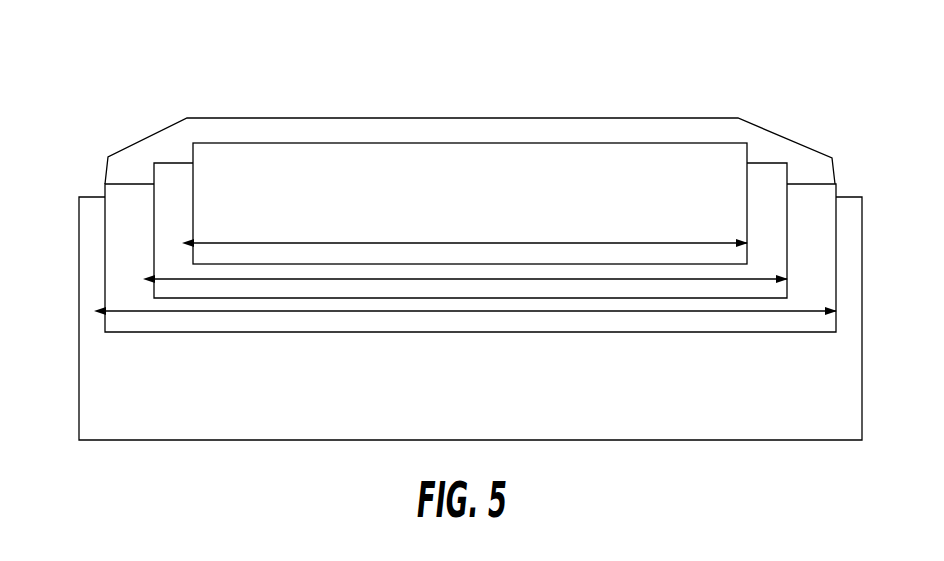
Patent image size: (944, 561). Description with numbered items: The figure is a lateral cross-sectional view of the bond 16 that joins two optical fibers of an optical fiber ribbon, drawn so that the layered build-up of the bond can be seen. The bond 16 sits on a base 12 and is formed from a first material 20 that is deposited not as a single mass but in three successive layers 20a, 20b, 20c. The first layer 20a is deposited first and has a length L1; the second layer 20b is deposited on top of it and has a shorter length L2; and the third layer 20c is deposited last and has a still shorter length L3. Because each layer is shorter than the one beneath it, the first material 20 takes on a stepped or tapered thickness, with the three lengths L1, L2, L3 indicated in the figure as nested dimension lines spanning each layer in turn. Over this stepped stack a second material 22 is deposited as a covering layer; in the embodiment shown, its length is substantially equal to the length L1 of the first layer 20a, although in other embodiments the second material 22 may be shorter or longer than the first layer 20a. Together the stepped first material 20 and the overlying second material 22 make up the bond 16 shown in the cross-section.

The substrate 12 is at (123, 388).
The bond 16 is at (460, 244).
The first material 20 is at (497, 196).
The first layer 20a is at (827, 200).
The second layer 20b is at (782, 162).
The third layer 20c is at (742, 150).
The second material 22 is at (641, 130).
The length of first layer L1 is at (449, 311).
The length of second layer L2 is at (516, 279).
The length of third layer L3 is at (592, 243).